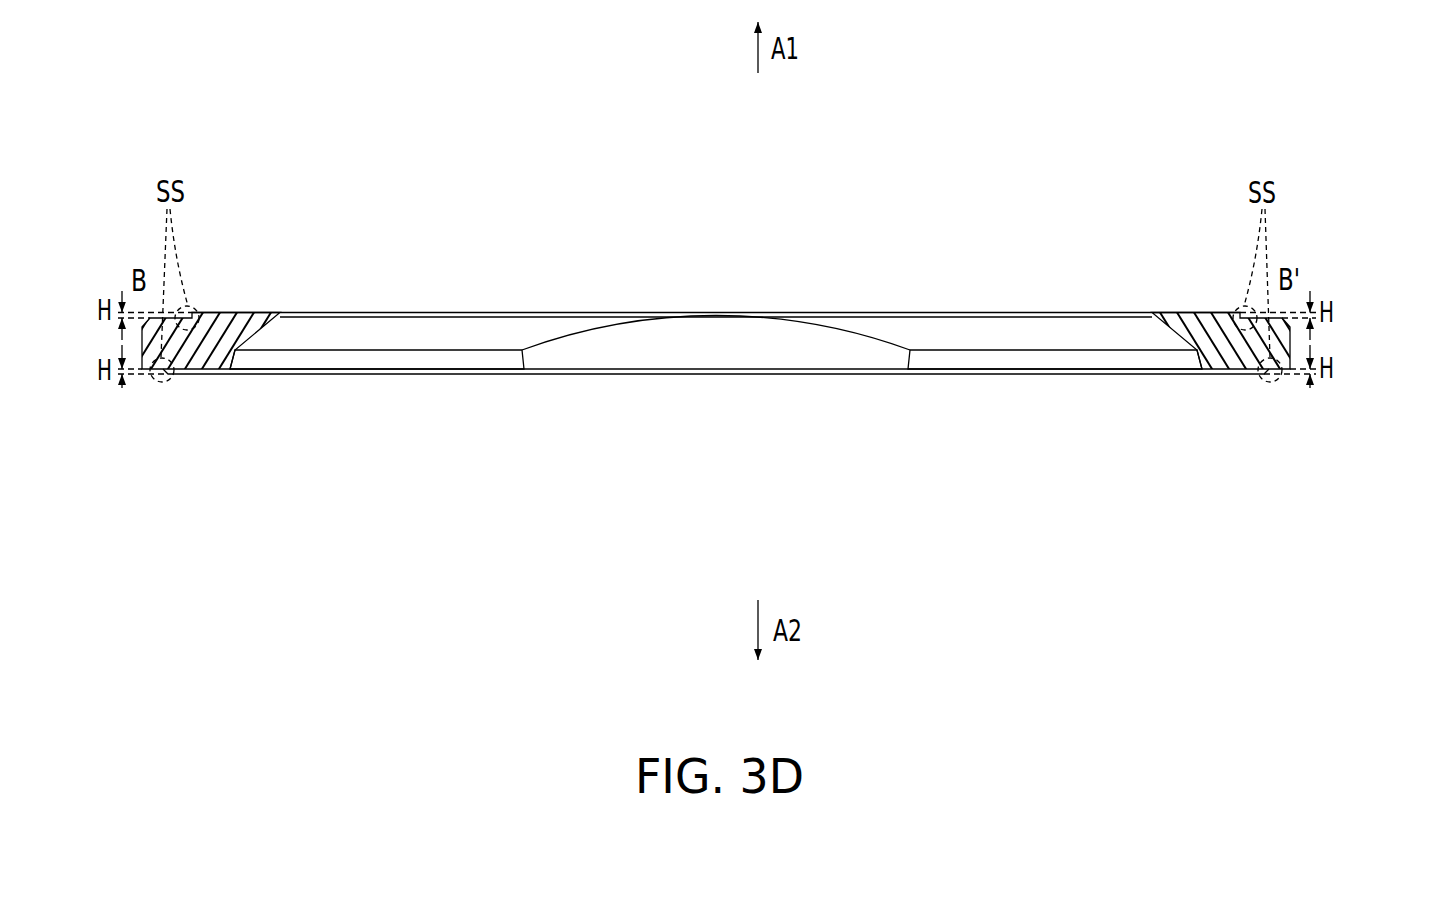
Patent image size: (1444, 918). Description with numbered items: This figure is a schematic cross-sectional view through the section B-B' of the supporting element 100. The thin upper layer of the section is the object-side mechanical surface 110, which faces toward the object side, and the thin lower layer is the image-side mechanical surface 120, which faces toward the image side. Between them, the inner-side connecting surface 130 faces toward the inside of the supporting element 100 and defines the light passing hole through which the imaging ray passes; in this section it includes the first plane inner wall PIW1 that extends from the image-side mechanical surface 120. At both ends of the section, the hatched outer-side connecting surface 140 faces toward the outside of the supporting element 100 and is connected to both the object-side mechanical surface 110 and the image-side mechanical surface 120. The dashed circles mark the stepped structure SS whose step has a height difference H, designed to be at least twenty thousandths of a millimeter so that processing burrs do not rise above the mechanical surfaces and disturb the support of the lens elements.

The supporting element 100 is at (1364, 553).
The object-side mechanical surface 110 is at (235, 311).
The image-side mechanical surface 120 is at (185, 376).
The inner-side connecting surface 130 is at (260, 332).
The outer-side connecting surface 140 is at (141, 339).